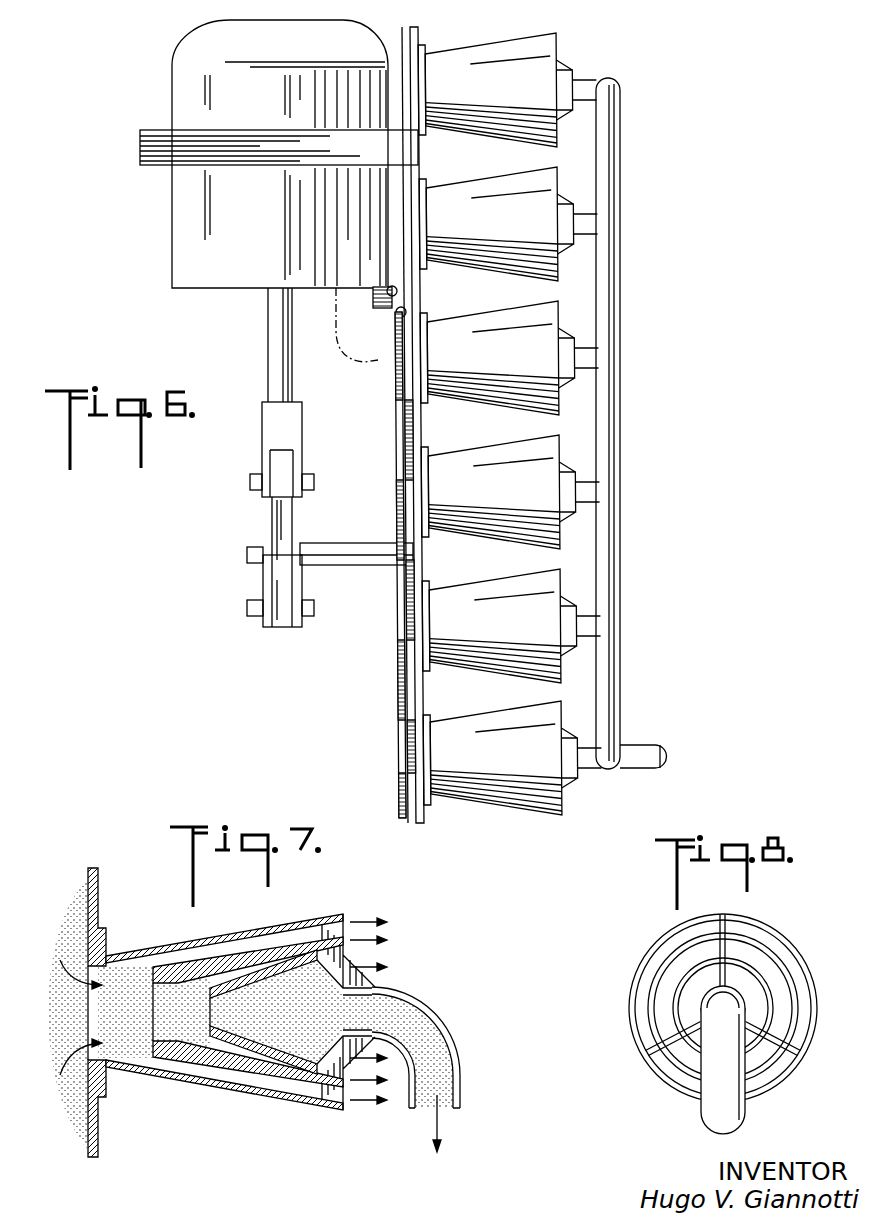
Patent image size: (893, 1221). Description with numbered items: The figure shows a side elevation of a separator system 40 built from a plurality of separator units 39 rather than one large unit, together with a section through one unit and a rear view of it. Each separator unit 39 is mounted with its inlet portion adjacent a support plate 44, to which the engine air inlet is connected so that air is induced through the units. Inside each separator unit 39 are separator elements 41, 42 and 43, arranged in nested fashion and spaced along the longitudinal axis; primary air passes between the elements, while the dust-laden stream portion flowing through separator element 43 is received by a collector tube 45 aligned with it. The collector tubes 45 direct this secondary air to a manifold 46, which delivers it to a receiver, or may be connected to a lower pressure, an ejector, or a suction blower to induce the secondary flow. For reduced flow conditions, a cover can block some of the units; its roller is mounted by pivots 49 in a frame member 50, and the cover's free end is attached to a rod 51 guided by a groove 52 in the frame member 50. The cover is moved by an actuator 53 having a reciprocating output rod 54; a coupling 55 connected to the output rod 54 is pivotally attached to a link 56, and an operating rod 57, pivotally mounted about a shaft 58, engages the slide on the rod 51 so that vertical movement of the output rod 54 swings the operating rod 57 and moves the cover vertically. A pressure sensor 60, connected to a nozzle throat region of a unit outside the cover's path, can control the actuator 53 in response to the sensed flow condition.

In FIG. 6, the separator unit 39 is at (494, 812).
In FIG. 7, the separator unit 39 is at (312, 890).
In FIG. 6, the separator system 40 is at (392, 682).
In FIG. 7, the separator element 41 is at (128, 1068).
In FIG. 8, the separator element 41 is at (655, 1078).
In FIG. 7, the separator element 42 is at (198, 1075).
In FIG. 8, the separator element 42 is at (648, 1032).
In FIG. 7, the separator element 43 is at (270, 1045).
In FIG. 8, the separator element 43 is at (672, 1000).
In FIG. 6, the support plate 44 is at (420, 822).
In FIG. 7, the support plate 44 is at (99, 892).
In FIG. 6, the collector tube 45 is at (588, 503).
In FIG. 7, the collector tube 45 is at (425, 1003).
In FIG. 8, the collector tube 45 is at (710, 1117).
In FIG. 6, the manifold 46 is at (610, 682).
In FIG. 6, the pivot 49 is at (388, 287).
In FIG. 6, the frame member 50 is at (383, 307).
In FIG. 6, the rod 51 is at (396, 313).
In FIG. 6, the groove 52 is at (405, 725).
In FIG. 6, the actuator 53 is at (298, 210).
In FIG. 6, the output rod 54 is at (268, 353).
In FIG. 6, the coupling 55 is at (262, 433).
In FIG. 6, the link 56 is at (273, 520).
In FIG. 6, the operating rod 57 is at (268, 585).
In FIG. 6, the shaft 58 is at (346, 548).
In FIG. 6, the pressure sensor 60 is at (365, 362).